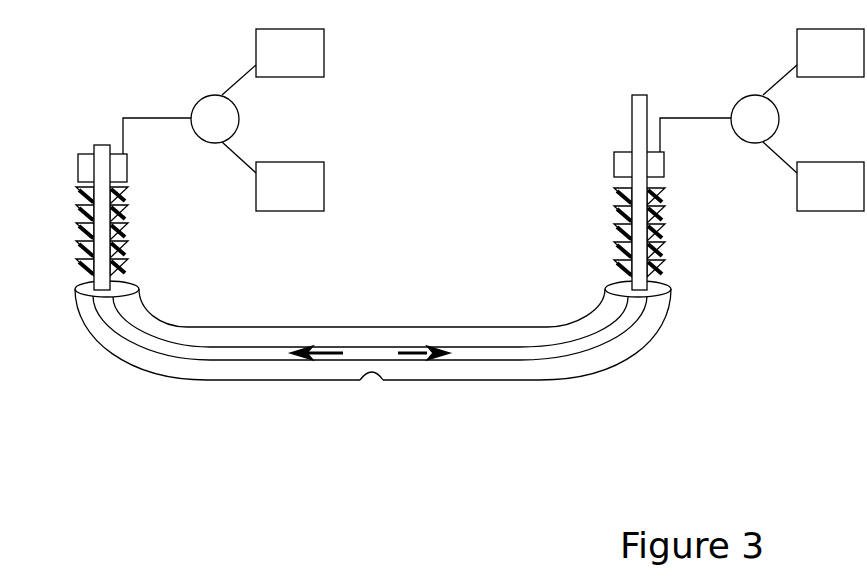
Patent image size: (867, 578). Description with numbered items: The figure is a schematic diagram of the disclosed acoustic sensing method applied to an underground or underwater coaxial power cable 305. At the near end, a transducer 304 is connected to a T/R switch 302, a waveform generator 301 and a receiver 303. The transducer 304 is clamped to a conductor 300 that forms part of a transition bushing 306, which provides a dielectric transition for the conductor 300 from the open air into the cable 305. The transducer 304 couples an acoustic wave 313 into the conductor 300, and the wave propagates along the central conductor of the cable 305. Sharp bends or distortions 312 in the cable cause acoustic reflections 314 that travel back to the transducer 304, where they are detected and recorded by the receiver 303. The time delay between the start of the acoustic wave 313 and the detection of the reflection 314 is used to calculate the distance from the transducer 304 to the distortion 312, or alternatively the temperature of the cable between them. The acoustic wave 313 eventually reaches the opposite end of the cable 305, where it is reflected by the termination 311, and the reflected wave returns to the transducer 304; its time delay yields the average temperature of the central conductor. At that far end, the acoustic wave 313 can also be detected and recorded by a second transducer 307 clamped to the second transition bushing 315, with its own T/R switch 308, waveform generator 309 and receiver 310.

The conductor 300 is at (102, 145).
The waveform generator 301 is at (290, 53).
The T/R switch 302 is at (210, 117).
The receiver 303 is at (290, 186).
The transducer 304 is at (85, 168).
The cable 305 is at (178, 328).
The transition bushing 306 is at (83, 245).
The second transducer 307 is at (625, 160).
The T/R switch 308 is at (750, 117).
The waveform generator 309 is at (830, 53).
The receiver 310 is at (830, 186).
The termination 311 is at (642, 90).
The distortion 312 is at (377, 382).
The acoustic wave 313 is at (413, 360).
The acoustic reflection 314 is at (323, 357).
The second transition bushing 315 is at (665, 203).